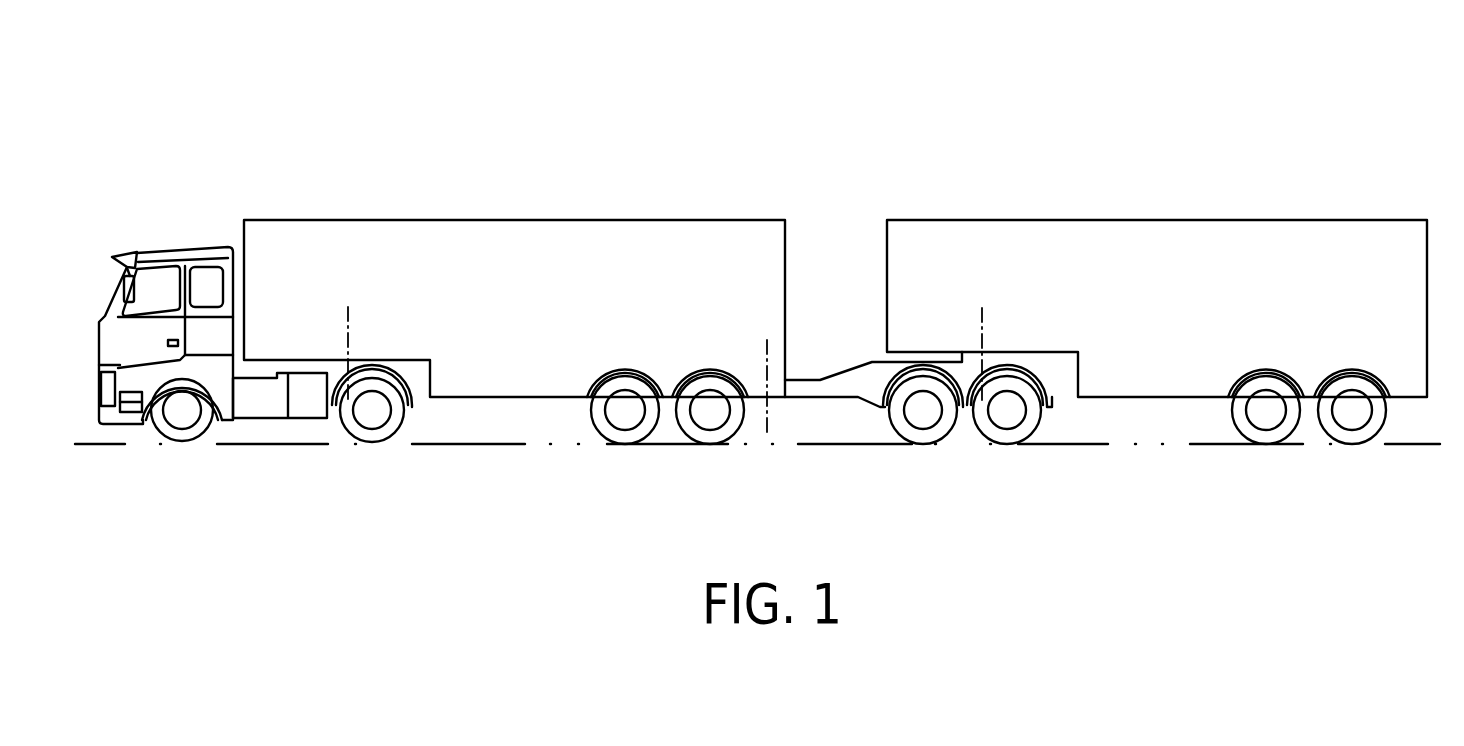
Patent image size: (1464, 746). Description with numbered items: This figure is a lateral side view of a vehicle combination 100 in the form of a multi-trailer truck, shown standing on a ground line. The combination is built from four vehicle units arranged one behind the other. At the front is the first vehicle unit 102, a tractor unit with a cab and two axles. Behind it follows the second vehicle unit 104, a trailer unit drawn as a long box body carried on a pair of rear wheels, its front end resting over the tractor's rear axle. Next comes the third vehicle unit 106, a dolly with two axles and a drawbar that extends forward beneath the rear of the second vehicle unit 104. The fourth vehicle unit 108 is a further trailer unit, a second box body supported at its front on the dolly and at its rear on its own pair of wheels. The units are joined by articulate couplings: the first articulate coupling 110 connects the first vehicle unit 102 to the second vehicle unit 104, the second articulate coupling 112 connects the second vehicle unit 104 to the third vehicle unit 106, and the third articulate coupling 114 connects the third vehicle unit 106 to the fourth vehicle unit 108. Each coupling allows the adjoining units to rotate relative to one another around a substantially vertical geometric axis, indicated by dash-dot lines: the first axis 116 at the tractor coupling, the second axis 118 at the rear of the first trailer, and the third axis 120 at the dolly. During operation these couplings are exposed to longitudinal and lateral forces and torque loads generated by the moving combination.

The vehicle combination 100 is at (709, 65).
The first vehicle unit 102 is at (245, 313).
The second vehicle unit 104 is at (514, 301).
The third vehicle unit 106 is at (910, 348).
The fourth vehicle unit 108 is at (1174, 187).
The first articulate coupling 110 is at (327, 362).
The second articulate coupling 112 is at (760, 385).
The third articulate coupling 114 is at (972, 357).
The first substantially vertical geometric axis 116 is at (345, 318).
The second substantially vertical geometric axis 118 is at (762, 352).
The third substantially vertical geometric axis 120 is at (978, 318).